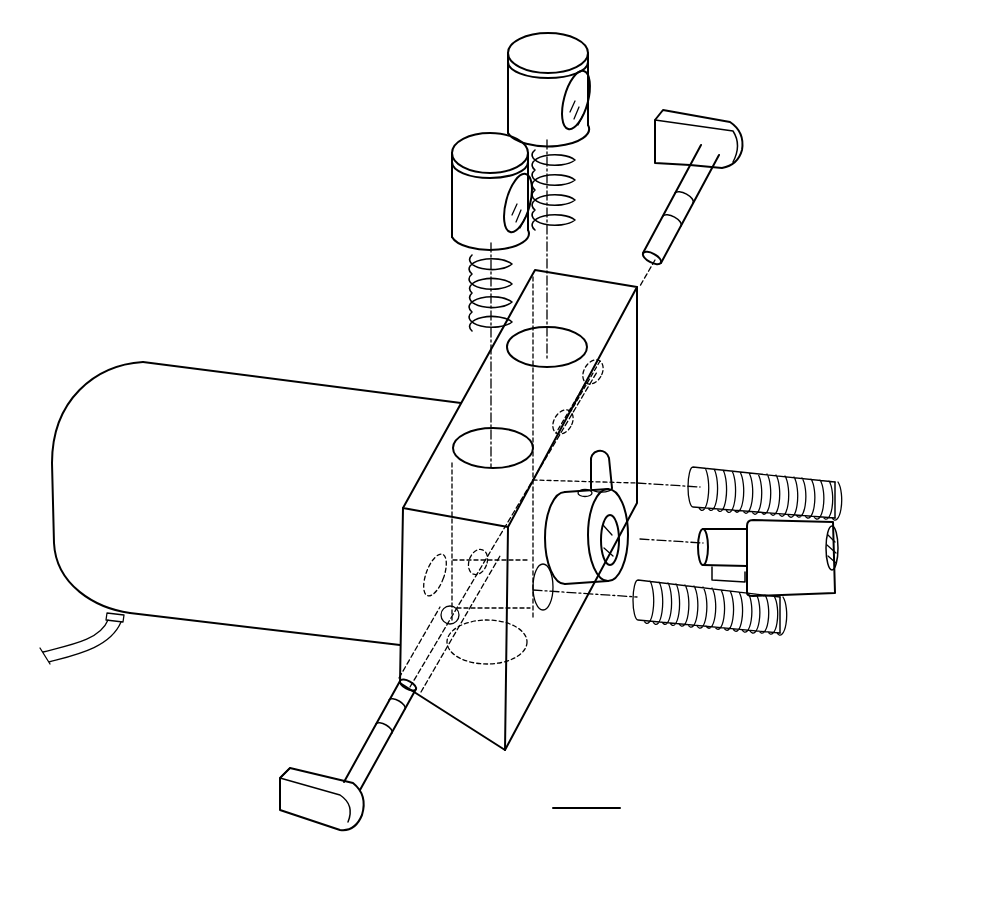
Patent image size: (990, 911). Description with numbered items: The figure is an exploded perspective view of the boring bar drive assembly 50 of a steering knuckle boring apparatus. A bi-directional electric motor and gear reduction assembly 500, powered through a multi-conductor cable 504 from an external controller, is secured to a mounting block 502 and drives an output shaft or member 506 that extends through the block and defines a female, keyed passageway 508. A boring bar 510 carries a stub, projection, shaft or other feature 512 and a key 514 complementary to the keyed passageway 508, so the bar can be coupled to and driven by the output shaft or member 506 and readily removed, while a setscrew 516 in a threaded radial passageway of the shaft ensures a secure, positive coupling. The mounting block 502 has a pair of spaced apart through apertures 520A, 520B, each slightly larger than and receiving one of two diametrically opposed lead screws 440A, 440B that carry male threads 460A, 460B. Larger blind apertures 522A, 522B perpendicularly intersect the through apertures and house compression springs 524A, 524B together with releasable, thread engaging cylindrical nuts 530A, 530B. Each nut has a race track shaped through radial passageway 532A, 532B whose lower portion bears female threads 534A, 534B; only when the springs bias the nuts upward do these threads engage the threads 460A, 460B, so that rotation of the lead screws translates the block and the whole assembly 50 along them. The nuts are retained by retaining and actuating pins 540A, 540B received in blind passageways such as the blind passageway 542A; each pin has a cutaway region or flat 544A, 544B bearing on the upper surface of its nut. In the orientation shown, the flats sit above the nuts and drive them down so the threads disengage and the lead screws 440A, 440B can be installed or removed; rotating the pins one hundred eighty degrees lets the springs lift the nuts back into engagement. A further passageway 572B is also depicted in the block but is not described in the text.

The boring bar drive assembly 50 is at (244, 163).
The bi-directional electric motor and gear reduction assembly 500 is at (230, 364).
The multi-conductor cable 504 is at (80, 643).
The mounting block 502 is at (462, 715).
The blind aperture 522A is at (482, 450).
The blind aperture 522B is at (568, 343).
The blind passageway 542A is at (441, 612).
The through aperture 520A is at (541, 615).
The hidden pin bore 572B is at (597, 368).
The releasable, thread engaging cylindrical nut 530A is at (487, 155).
The through radial passageway 532A is at (512, 204).
The female threads 534A is at (523, 230).
The releasable, thread engaging cylindrical nut 530B is at (590, 68).
The through radial passageway 532B is at (570, 53).
The female threads 534B is at (590, 113).
The compression spring 524A is at (472, 302).
The compression spring 524B is at (575, 173).
The cutaway region or flat 544A is at (385, 733).
The retaining and actuating pin 540A is at (312, 805).
The cutaway region or flat 544B is at (675, 220).
The retaining and actuating pin 540B is at (718, 137).
The output shaft or member 506 is at (563, 558).
The female, keyed passageway 508 is at (602, 565).
The through aperture 520B is at (590, 492).
The setscrew 516 is at (600, 465).
The boring bar 510 is at (807, 552).
The stub, projection, shaft or other feature 512 is at (735, 540).
The key 514 is at (727, 574).
The male threads 460A is at (735, 608).
The lead screw 440A is at (773, 611).
The male threads 460B is at (773, 483).
The lead screw 440B is at (828, 505).